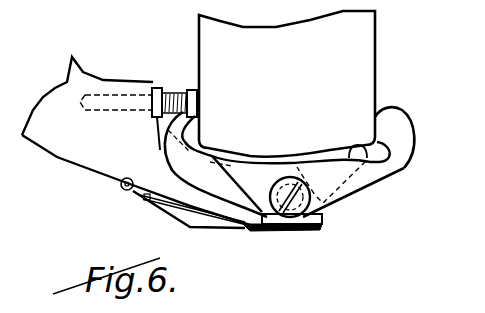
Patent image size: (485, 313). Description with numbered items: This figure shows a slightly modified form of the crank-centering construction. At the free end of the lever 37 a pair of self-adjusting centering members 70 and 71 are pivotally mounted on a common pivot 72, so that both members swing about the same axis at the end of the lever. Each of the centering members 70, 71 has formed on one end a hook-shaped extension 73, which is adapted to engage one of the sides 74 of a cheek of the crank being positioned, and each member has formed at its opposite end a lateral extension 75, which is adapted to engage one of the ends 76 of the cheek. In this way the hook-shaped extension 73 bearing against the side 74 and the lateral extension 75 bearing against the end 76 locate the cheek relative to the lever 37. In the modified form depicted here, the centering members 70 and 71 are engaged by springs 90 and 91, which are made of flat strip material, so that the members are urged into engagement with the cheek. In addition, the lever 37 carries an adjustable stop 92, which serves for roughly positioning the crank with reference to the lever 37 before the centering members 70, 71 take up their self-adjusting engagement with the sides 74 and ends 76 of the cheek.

The lever 37 is at (65, 142).
The self-adjusting centering member 70 is at (378, 177).
The self-adjusting centering member 71 is at (197, 176).
The common pivot 72 is at (322, 202).
The hook-shaped extension 73 is at (199, 114).
The side of cheek 74 is at (212, 32).
The lateral extension 75 is at (357, 146).
The end of cheek 76 is at (282, 157).
The spring 90 is at (256, 232).
The spring 91 is at (310, 232).
The adjustable stop 92 is at (192, 88).